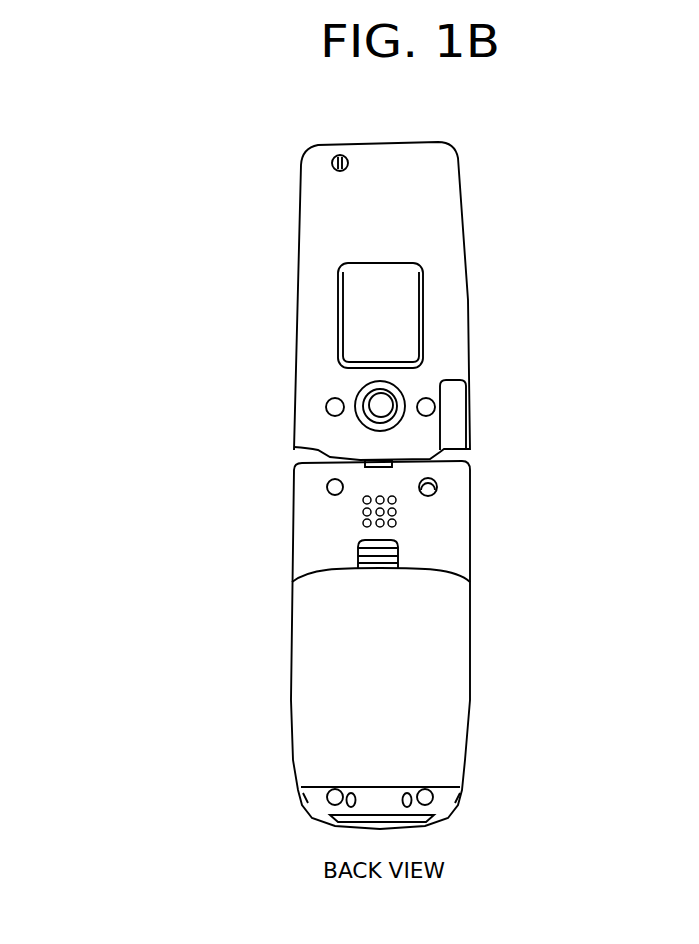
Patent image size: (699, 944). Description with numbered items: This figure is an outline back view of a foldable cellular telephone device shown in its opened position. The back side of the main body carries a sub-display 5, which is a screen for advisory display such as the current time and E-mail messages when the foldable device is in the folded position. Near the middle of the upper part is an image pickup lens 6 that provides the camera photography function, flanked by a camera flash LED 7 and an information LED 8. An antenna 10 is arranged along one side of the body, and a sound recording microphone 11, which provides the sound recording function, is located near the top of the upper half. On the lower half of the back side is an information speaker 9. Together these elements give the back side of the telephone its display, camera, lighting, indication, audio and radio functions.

The sub-display 5 is at (356, 294).
The image pickup lens 6 is at (388, 396).
The camera flash LED 7 is at (431, 397).
The information LED 8 is at (326, 407).
The information speaker 9 is at (396, 511).
The antenna 10 is at (455, 412).
The microphone 11 is at (340, 156).